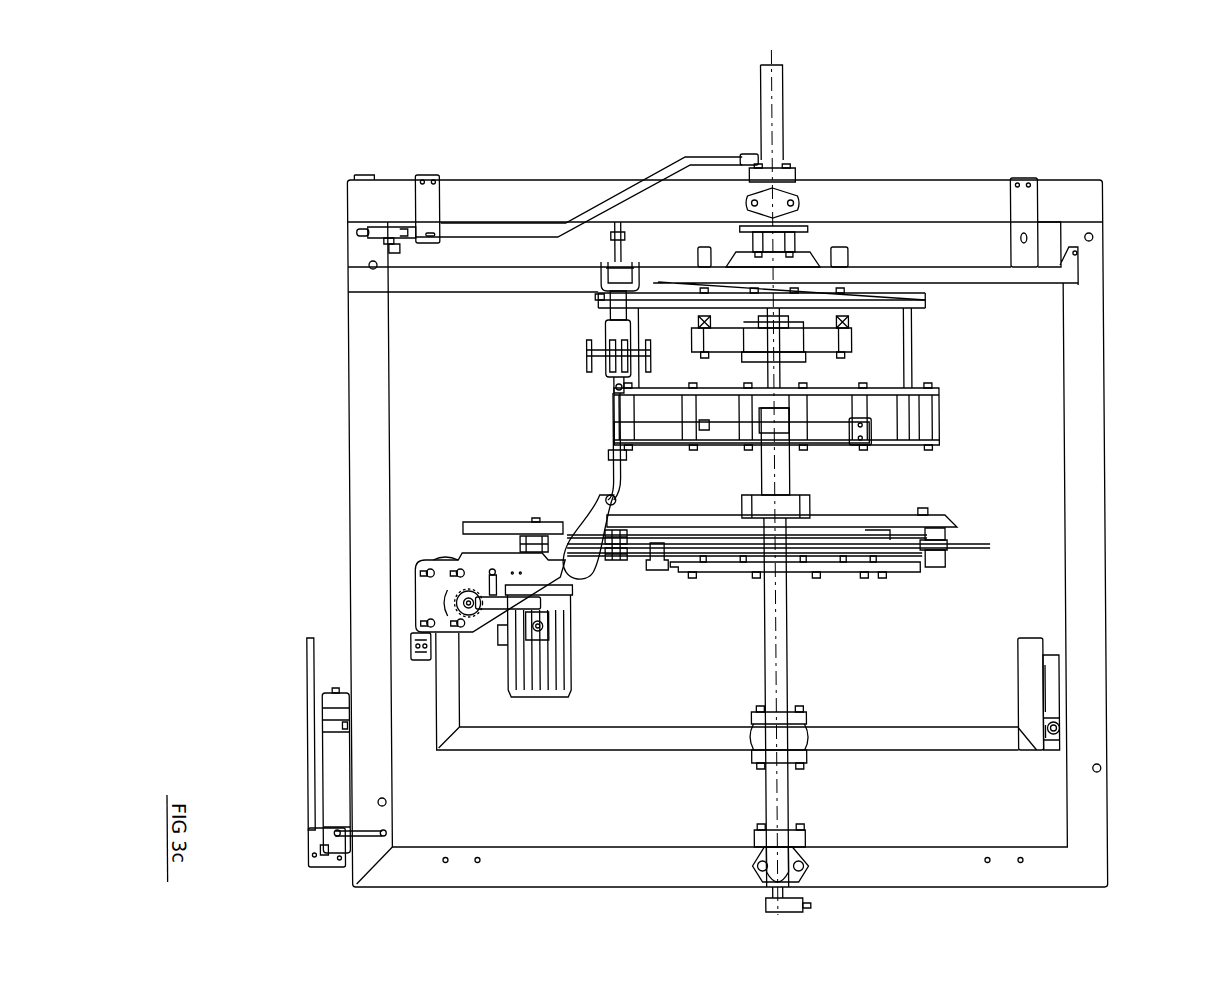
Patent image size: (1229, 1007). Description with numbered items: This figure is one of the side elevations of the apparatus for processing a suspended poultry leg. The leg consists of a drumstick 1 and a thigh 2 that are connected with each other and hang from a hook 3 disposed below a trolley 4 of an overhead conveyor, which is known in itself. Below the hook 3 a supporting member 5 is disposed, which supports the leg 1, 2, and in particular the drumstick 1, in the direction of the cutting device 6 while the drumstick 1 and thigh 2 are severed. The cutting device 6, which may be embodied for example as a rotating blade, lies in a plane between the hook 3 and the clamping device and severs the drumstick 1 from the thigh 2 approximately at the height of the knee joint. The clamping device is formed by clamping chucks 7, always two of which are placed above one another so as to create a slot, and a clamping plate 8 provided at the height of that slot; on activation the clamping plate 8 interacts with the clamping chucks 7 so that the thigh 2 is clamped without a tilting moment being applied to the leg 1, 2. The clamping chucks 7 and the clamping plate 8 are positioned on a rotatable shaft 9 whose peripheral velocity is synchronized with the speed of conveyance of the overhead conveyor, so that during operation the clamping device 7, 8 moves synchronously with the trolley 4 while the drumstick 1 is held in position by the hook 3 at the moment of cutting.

The drumstick 1 is at (590, 505).
The thigh 2 is at (560, 552).
The hook 3 is at (603, 475).
The trolley 4 is at (598, 296).
The supporting member 5 is at (905, 513).
The cutting device 6 is at (568, 520).
The clamping chucks 7 is at (988, 537).
The clamping plate 8 is at (993, 549).
The rotatable shaft 9 is at (790, 613).